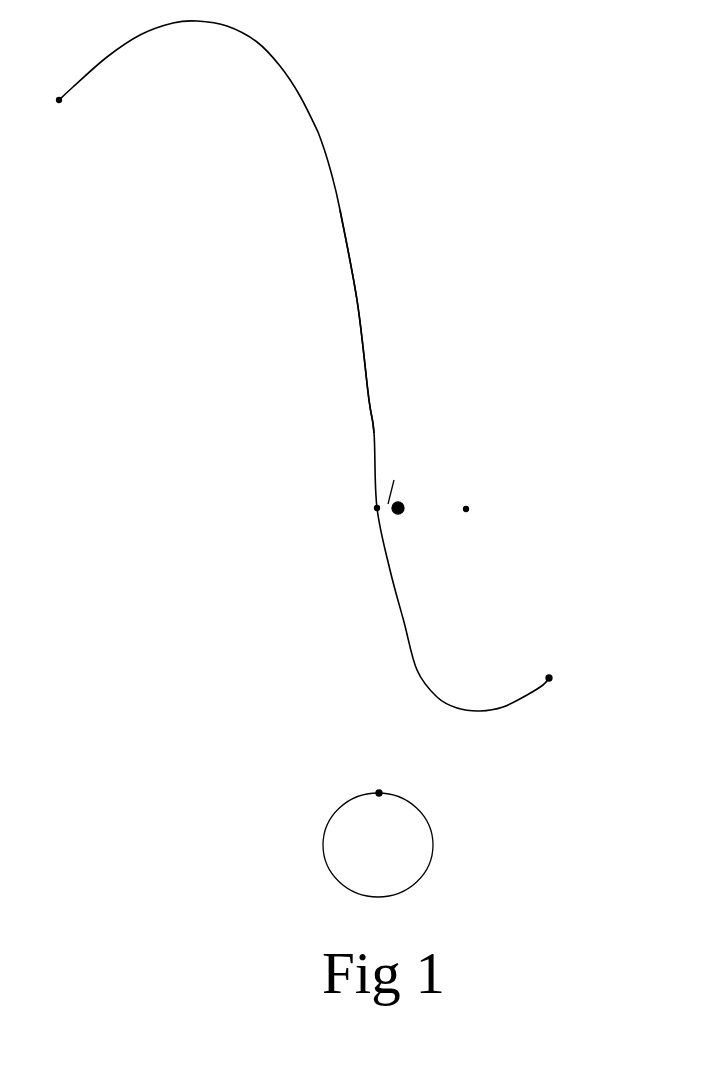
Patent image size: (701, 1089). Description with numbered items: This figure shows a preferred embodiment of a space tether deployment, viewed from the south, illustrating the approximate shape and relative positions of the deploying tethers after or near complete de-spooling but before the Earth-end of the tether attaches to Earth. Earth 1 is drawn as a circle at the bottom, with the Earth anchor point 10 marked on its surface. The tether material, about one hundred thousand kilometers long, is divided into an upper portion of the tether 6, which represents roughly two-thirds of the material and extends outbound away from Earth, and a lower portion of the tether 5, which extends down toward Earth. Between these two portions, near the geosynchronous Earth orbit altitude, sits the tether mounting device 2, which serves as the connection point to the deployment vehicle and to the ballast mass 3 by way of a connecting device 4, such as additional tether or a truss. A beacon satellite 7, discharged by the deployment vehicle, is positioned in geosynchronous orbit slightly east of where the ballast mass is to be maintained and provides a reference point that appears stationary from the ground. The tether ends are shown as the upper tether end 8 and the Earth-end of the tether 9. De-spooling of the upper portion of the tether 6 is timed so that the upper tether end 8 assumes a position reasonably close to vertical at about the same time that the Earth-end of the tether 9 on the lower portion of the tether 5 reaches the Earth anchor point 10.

The Earth 1 is at (433, 843).
The tether mounting device 2 is at (374, 509).
The ballast mass 3 is at (404, 514).
The connecting device 4 is at (397, 476).
The lower portion of the tether 5 is at (404, 622).
The upper portion of the tether 6 is at (374, 433).
The beacon satellite 7 is at (470, 508).
The upper tether end 8 is at (62, 102).
The Earth-end of the tether 9 is at (541, 678).
The Earth anchor point 10 is at (372, 791).